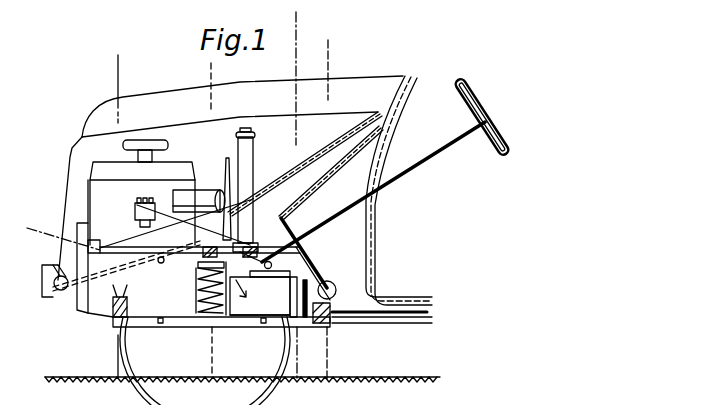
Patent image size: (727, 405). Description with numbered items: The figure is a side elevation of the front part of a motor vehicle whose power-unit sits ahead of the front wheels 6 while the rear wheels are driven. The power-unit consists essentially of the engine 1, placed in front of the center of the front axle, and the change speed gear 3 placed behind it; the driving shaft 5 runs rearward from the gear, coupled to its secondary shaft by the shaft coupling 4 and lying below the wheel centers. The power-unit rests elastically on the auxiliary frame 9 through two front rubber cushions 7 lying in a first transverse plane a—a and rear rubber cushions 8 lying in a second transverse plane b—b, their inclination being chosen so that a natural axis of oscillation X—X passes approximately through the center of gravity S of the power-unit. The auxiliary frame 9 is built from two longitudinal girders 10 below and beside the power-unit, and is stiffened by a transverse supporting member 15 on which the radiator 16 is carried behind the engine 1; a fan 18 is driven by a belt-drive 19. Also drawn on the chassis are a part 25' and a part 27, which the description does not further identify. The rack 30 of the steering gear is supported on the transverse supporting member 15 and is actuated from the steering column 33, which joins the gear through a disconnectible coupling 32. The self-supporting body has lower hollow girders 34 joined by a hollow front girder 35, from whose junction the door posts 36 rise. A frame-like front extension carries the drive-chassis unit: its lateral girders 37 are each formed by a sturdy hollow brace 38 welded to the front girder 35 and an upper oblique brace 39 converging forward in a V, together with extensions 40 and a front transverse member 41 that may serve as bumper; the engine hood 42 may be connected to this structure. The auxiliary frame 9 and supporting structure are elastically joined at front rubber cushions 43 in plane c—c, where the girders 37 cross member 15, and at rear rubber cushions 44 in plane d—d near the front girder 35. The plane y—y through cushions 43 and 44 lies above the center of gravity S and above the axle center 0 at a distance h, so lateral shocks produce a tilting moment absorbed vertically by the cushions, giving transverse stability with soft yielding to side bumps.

The engine 1 is at (97, 215).
The change speed gear 3 is at (303, 280).
The shaft coupling 4 is at (312, 323).
The driving shaft 5 is at (432, 308).
The front wheels 6 is at (157, 353).
The front rubber cushions 7 is at (117, 315).
The rear rubber cushions 8 is at (290, 327).
The auxiliary frame 9 is at (220, 323).
The longitudinal girders 10 is at (240, 323).
The transverse supporting member 15 is at (195, 268).
The radiator 16 is at (254, 165).
The fan 18 is at (226, 170).
The belt-drive 19 is at (220, 220).
The stop lug 25' is at (168, 339).
The spring 27 is at (203, 320).
The rack 30 is at (250, 247).
The disconnectible coupling 32 is at (294, 243).
The steering column 33 is at (443, 147).
The lower hollow girders 34 is at (415, 323).
The hollow front girder 35 is at (343, 288).
The door posts 36 is at (374, 212).
The lateral girders 37 is at (292, 212).
The hollow brace 38 is at (300, 258).
The upper oblique brace 39 is at (343, 147).
The extensions 40 is at (116, 278).
The front transverse member 41 is at (64, 292).
The engine hood 42 is at (110, 105).
The front rubber cushions 43 is at (161, 263).
The rear rubber cushions 44 is at (328, 323).
The center of the front axle 0 is at (192, 290).
The center of gravity S is at (144, 274).
The axis of oscillation X is at (52, 233).
The first transverse plane a is at (109, 211).
The second transverse plane b is at (304, 194).
The third transverse plane c is at (203, 218).
The fourth transverse plane d is at (335, 207).
The distance h is at (243, 286).
The plane y is at (128, 197).